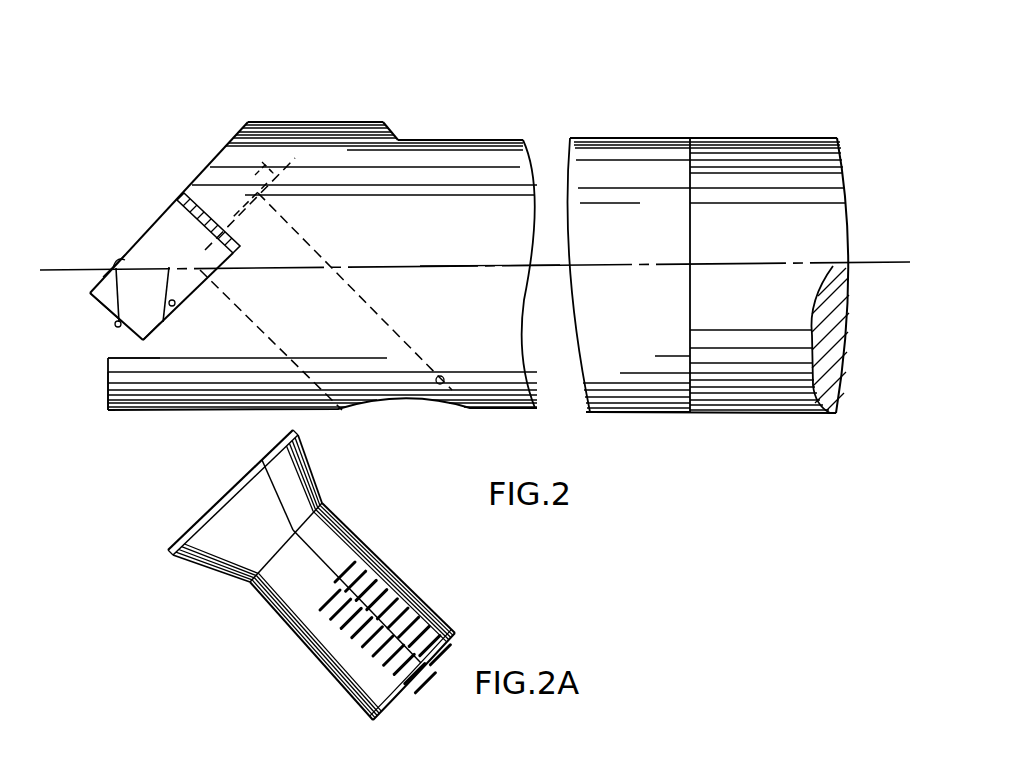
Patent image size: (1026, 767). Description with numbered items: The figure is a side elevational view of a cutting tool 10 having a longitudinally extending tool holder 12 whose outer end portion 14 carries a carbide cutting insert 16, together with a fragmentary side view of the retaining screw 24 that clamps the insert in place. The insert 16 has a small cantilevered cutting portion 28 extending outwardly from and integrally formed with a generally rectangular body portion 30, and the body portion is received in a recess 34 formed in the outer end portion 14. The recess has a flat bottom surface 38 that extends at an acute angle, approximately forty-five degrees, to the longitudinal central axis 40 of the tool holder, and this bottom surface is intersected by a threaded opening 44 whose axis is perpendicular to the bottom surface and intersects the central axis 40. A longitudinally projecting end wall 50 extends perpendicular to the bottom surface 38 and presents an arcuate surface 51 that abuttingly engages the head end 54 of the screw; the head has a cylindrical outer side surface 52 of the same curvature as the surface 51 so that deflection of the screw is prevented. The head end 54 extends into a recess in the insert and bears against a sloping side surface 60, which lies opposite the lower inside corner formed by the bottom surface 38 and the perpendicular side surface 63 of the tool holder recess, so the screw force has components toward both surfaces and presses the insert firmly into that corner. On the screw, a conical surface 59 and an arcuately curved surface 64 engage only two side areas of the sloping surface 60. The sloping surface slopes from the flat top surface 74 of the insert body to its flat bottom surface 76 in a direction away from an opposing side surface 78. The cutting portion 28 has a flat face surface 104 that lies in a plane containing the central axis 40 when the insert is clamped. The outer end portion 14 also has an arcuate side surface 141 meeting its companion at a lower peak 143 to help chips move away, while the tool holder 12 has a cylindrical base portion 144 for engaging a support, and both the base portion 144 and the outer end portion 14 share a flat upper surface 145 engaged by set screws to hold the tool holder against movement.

In FIG. 2, the cutting tool 10 is at (847, 84).
In FIG. 2, the tool holder 12 is at (781, 134).
In FIG. 2, the outer end portion 14 is at (443, 137).
In FIG. 2, the insert 16 is at (143, 231).
In FIG. 2, the retaining screw 24 is at (303, 239).
In FIG. 2A, the retaining screw 24 is at (398, 548).
In FIG. 2, the cutting portion 28 is at (104, 324).
In FIG. 2, the body portion 30 is at (152, 220).
In FIG. 2, the recess 34 is at (150, 340).
In FIG. 2, the bottom surface 38 is at (194, 287).
In FIG. 2, the longitudinal central axis 40 is at (496, 242).
In FIG. 2, the threaded opening 44 is at (443, 376).
In FIG. 2, the end wall 50 is at (252, 130).
In FIG. 2, the arcuate surface 51 is at (280, 150).
In FIG. 2A, the cylindrical outer side surface 52 is at (295, 430).
In FIG. 2, the head end 54 is at (268, 156).
In FIG. 2A, the head end 54 is at (320, 482).
In FIG. 2A, the conical surface 59 is at (213, 578).
In FIG. 2, the sloping side surface 60 is at (140, 252).
In FIG. 2, the side surface 63 is at (118, 328).
In FIG. 2, the arcuately curved surface 64 is at (268, 182).
In FIG. 2, the top surface 74 is at (120, 263).
In FIG. 2, the bottom surface 76 is at (163, 343).
In FIG. 2, the side surface 78 is at (104, 306).
In FIG. 2, the face surface 104 is at (141, 290).
In FIG. 2, the arcuate side surface 141 is at (624, 410).
In FIG. 2, the lower peak 143 is at (502, 410).
In FIG. 2, the cylindrical base portion 144 is at (772, 410).
In FIG. 2, the flat upper surface 145 is at (716, 137).